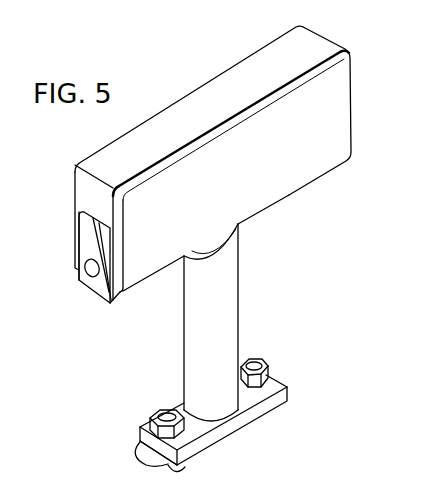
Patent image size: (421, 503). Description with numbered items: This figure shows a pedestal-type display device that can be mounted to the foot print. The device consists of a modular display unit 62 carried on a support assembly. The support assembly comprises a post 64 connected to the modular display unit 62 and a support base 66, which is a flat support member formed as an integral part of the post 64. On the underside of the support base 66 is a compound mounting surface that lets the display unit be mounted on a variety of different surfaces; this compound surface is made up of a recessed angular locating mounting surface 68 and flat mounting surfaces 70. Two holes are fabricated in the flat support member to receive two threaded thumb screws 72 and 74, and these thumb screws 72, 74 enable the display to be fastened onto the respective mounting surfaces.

The modular display unit 62 is at (245, 72).
The post 64 is at (233, 300).
The support base 66 is at (258, 412).
The recessed angular locating mounting surface 68 is at (165, 464).
The flat mounting surfaces 70 is at (143, 450).
The thumb screw 72 is at (165, 413).
The thumb screw 74 is at (256, 360).